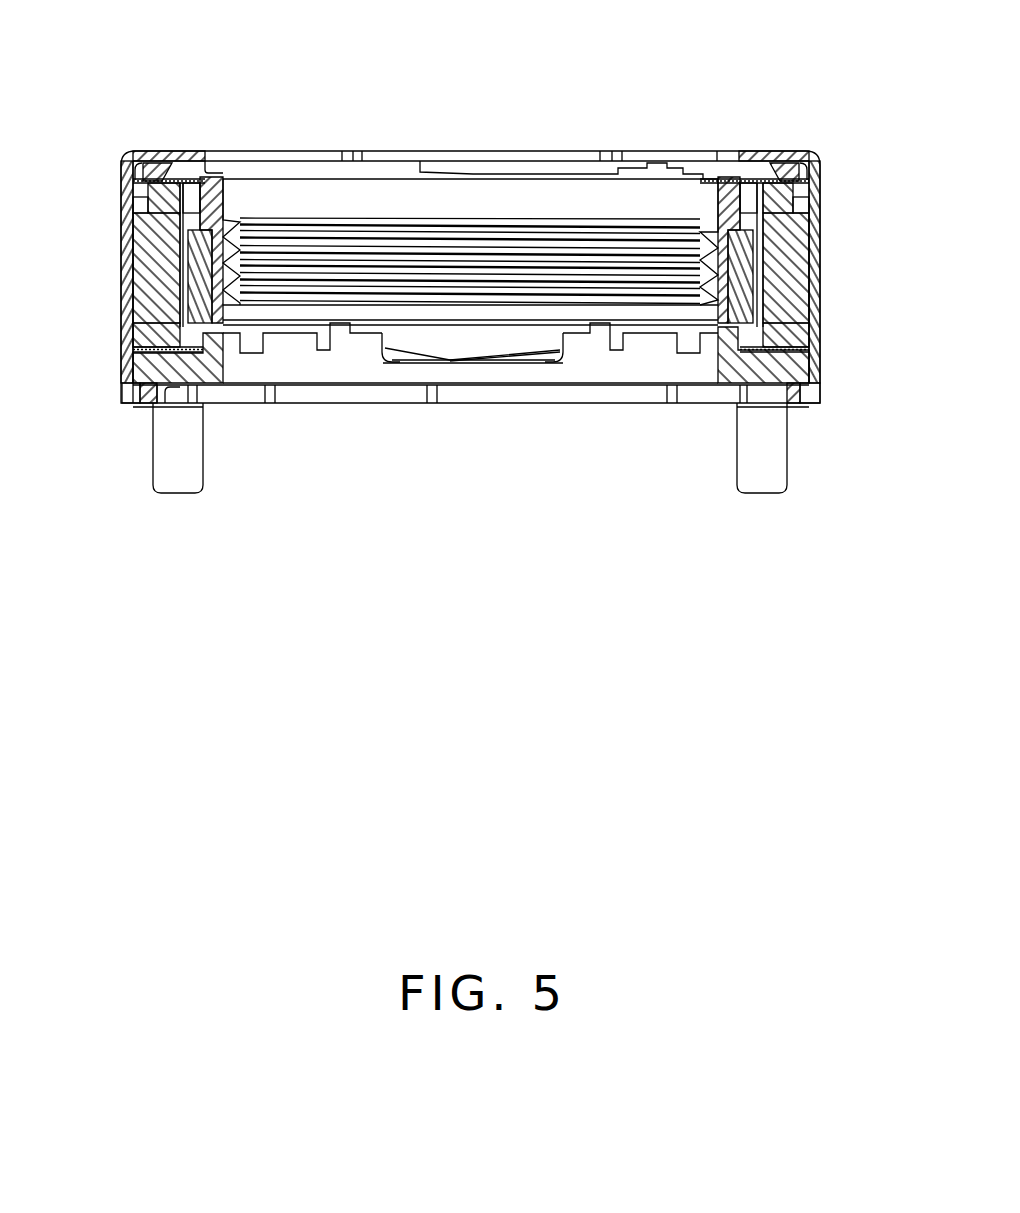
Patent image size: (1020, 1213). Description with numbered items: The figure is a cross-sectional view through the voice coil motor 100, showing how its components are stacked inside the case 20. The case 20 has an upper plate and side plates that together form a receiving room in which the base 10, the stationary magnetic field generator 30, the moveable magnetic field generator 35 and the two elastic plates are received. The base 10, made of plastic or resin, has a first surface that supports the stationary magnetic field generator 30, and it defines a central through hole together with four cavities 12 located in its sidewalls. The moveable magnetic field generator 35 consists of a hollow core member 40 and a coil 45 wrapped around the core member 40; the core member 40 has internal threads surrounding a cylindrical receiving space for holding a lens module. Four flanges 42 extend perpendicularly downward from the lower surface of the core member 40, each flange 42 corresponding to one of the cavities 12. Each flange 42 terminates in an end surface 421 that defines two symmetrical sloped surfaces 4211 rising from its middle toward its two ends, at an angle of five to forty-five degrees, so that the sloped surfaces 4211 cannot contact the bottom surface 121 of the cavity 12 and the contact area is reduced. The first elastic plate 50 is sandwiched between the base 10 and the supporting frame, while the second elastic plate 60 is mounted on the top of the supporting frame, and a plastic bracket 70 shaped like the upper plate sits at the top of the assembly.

The voice coil motor 100 is at (553, 74).
The base 10 is at (787, 368).
The cavity 12 is at (567, 356).
The bottom surface 121 is at (392, 363).
The case 20 is at (170, 155).
The stationary magnetic field generator 30 is at (132, 333).
The moveable magnetic field generator 35 is at (130, 255).
The core member 40 is at (203, 202).
The flange 42 is at (462, 343).
The end surface 421 is at (470, 365).
The sloped surface 4211 is at (540, 357).
The coil 45 is at (197, 292).
The first elastic plate 50 is at (805, 332).
The second elastic plate 60 is at (806, 153).
The bracket 70 is at (152, 178).